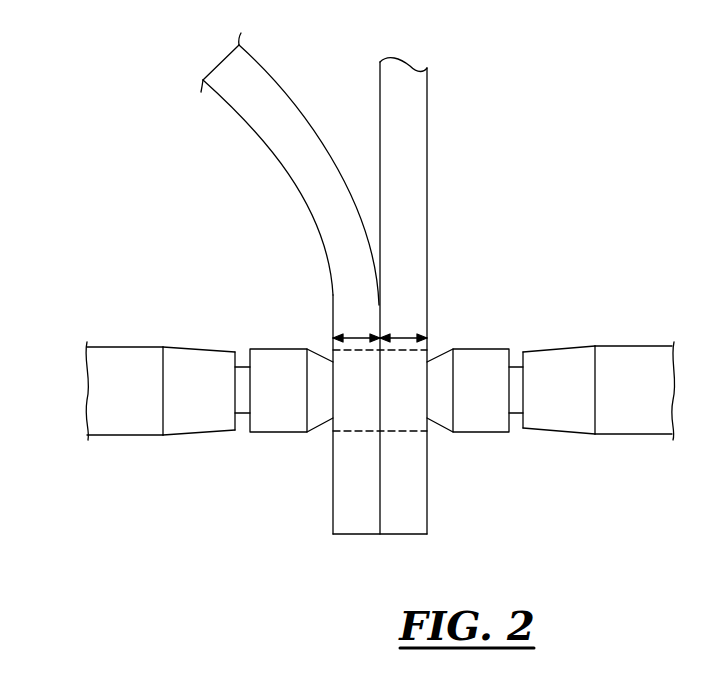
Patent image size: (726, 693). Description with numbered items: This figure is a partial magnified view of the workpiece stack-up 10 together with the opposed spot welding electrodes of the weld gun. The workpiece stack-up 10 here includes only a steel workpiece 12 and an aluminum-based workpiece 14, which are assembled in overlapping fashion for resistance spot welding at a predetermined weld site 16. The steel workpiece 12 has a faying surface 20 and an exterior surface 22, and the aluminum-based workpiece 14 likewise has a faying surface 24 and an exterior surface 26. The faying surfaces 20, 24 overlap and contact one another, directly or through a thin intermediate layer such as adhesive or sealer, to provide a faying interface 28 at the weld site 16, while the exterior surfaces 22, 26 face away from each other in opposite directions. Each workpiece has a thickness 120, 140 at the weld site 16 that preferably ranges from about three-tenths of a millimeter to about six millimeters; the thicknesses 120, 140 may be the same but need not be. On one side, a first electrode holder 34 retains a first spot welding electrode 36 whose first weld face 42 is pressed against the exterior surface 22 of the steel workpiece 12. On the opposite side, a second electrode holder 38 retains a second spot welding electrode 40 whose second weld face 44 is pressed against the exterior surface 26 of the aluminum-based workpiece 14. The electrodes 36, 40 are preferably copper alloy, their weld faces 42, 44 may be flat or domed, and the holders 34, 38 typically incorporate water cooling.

The workpiece stack-up 10 is at (374, 546).
The steel workpiece 12 is at (405, 296).
The aluminum-based workpiece 14 is at (280, 167).
The weld site 16 is at (378, 393).
The faying surface 20 is at (380, 115).
The exterior surface 22 is at (428, 175).
The faying surface 24 is at (287, 90).
The exterior surface 26 is at (263, 137).
The faying interface 28 is at (379, 392).
The first electrode holder 34 is at (553, 368).
The first spot welding electrode 36 is at (489, 445).
The second electrode holder 38 is at (190, 367).
The second spot welding electrode 40 is at (254, 443).
The first weld face 42 is at (427, 383).
The second weld face 44 is at (333, 430).
The thickness 120 is at (403, 332).
The thickness 140 is at (357, 337).